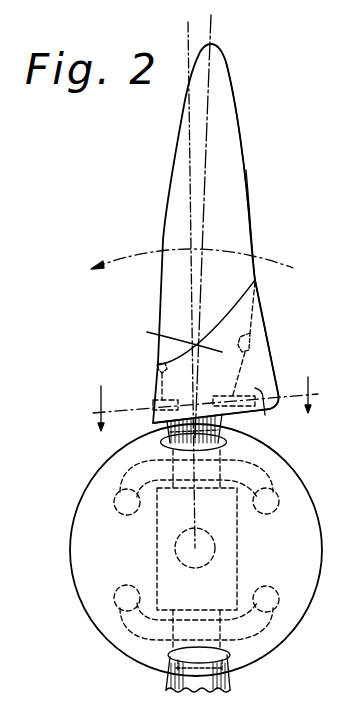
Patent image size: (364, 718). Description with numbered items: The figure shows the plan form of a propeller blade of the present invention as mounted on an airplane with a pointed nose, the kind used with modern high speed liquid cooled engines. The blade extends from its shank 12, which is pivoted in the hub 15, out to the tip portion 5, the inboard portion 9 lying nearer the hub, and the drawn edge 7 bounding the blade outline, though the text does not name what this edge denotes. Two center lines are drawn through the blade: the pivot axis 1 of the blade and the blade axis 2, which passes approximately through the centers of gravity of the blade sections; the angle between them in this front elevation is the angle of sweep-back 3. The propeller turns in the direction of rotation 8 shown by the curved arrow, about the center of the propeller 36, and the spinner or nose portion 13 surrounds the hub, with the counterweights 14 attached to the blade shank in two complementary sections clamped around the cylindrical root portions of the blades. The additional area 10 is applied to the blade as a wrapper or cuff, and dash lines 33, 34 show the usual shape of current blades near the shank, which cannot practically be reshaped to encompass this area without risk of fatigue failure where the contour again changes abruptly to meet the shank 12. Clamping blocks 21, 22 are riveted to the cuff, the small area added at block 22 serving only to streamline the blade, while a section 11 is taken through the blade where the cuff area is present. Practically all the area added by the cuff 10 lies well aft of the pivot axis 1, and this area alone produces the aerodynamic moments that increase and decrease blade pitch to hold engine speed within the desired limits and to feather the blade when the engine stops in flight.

The pivot axis 1 is at (188, 110).
The blade axis 2 is at (211, 74).
The angle of sweep-back 3 is at (200, 33).
The tip portion 5 is at (223, 137).
The blade trailing edge 7 is at (250, 180).
The direction of rotation 8 is at (268, 260).
The inboard portion 9 is at (194, 322).
The additional area 10 is at (258, 366).
The section 11 is at (212, 401).
The shank 12 is at (228, 443).
The spinner 13 is at (307, 513).
The counterweights 14 is at (273, 480).
The hub 15 is at (237, 546).
The clamping block 21 is at (265, 415).
The clamping block 22 is at (158, 402).
The dash line 33 is at (157, 363).
The dash line 34 is at (250, 336).
The center of the propeller 36 is at (193, 551).